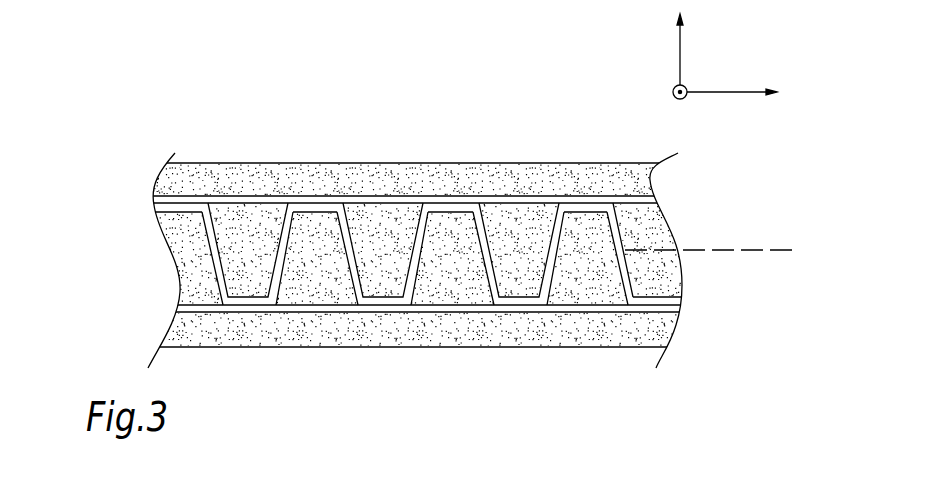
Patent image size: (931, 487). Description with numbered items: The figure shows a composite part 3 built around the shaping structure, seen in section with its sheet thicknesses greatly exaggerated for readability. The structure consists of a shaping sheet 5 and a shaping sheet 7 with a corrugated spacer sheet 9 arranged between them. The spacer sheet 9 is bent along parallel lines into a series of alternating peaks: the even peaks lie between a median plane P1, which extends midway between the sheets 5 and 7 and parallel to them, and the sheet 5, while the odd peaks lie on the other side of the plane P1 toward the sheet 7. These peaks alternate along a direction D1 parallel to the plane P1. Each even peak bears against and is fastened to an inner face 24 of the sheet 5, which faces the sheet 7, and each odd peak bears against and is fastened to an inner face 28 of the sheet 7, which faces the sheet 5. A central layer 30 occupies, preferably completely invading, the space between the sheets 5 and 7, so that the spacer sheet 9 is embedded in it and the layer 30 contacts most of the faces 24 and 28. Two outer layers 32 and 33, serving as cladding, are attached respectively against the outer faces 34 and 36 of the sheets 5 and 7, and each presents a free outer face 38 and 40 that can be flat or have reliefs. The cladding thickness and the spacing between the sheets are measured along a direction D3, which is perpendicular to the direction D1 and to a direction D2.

The composite part 3 is at (410, 142).
The shaping sheet 5 is at (648, 172).
The shaping sheet 7 is at (641, 307).
The spacer sheet 9 is at (622, 242).
The inner face 24 is at (507, 207).
The inner face 28 is at (578, 303).
The central layer 30 is at (197, 255).
The outer layer 32 is at (168, 182).
The outer layer 33 is at (177, 334).
The outer face 34 is at (462, 192).
The outer face 36 is at (387, 315).
The outer face 38 is at (247, 163).
The outer face 40 is at (274, 347).
The median plane P1 is at (722, 248).
The direction D1 is at (737, 82).
The direction D2 is at (675, 106).
The direction D3 is at (691, 48).